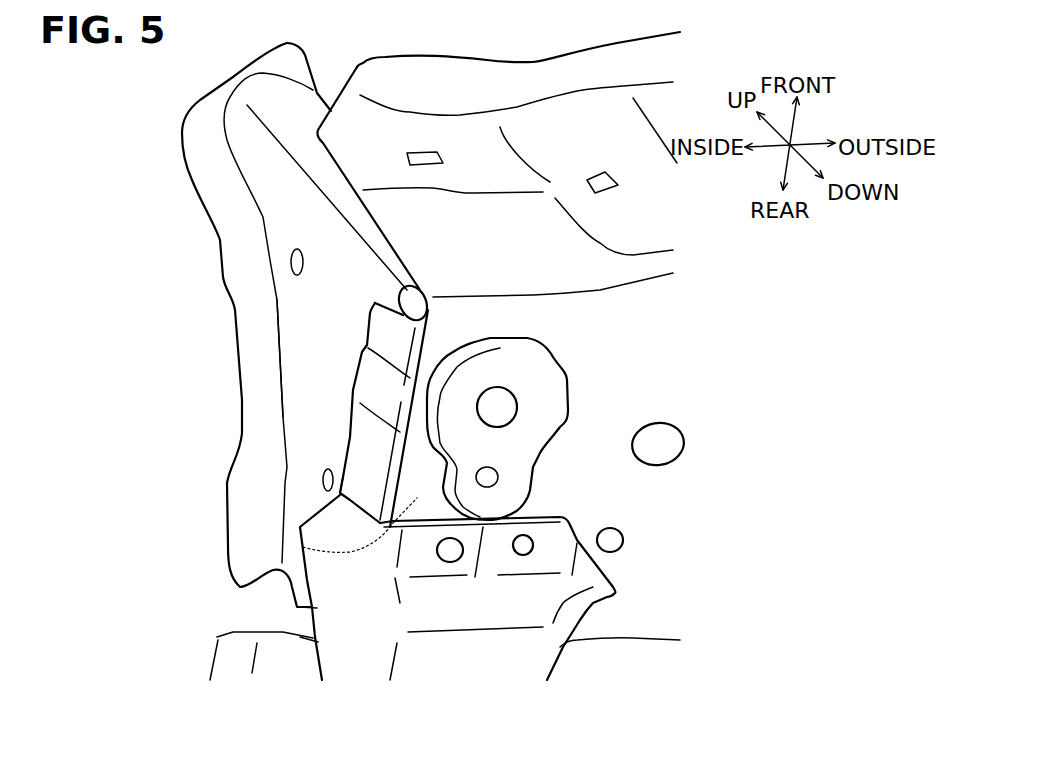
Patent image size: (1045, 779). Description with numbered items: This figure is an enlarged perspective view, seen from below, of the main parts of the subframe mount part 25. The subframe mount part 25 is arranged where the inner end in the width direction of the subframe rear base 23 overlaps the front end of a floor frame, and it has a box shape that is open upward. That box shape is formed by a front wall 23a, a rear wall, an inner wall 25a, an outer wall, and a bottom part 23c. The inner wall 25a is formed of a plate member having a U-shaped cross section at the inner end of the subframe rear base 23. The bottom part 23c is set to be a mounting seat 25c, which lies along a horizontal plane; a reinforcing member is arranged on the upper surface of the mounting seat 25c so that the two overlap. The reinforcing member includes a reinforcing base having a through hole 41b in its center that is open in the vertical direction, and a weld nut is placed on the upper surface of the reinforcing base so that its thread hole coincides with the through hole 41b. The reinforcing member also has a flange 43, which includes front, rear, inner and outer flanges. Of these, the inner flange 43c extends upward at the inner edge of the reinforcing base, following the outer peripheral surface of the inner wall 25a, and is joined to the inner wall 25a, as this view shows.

The subframe rear base 23 is at (463, 346).
The front wall 23a is at (480, 157).
The bottom part 23c is at (490, 598).
The subframe mount part 25 is at (165, 146).
The inner wall 25a is at (302, 338).
The mounting seat 25c is at (350, 553).
The through hole 41b is at (507, 417).
The flange 43 is at (237, 404).
The inner flange 43c is at (372, 460).